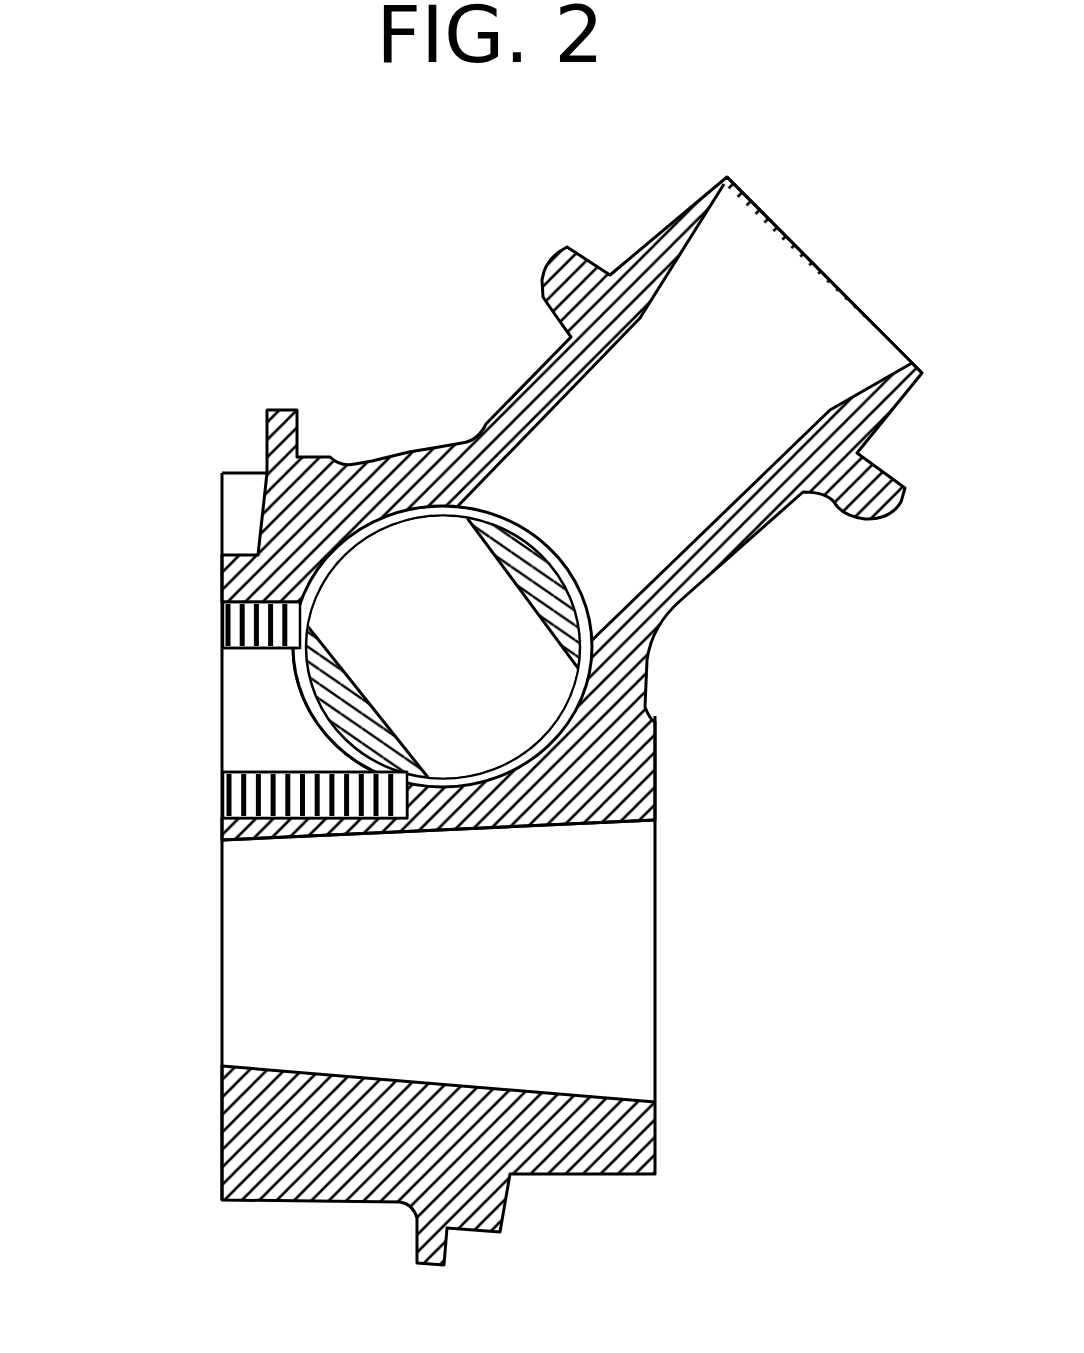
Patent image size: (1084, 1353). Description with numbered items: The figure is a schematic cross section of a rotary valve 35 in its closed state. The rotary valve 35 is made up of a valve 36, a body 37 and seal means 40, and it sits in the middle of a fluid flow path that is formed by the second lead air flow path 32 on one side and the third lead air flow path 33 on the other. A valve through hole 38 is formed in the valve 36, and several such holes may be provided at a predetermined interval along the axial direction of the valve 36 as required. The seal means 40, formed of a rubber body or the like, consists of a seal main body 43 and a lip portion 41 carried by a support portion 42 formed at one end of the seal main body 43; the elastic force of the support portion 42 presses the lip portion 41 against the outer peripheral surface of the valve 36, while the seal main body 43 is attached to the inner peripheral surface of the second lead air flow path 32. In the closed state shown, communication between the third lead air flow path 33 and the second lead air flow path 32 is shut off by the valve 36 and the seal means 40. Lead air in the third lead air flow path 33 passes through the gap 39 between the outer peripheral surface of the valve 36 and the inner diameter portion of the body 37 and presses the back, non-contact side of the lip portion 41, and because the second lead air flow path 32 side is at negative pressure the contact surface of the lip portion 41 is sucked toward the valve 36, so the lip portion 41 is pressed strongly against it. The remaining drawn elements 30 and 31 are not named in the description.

The body 30 is at (330, 462).
The main bore 31 is at (320, 1022).
The second lead air flow path 32 is at (258, 726).
The third lead air flow path 33 is at (742, 303).
The rotary valve 35 is at (396, 436).
The valve 36 is at (548, 587).
The body 37 is at (627, 743).
The valve through hole 38 is at (480, 720).
The gap 39 is at (503, 777).
The seal means 40 is at (212, 812).
The lip portion 41 is at (308, 603).
The support portion 42 is at (222, 641).
The seal main body 43 is at (222, 618).